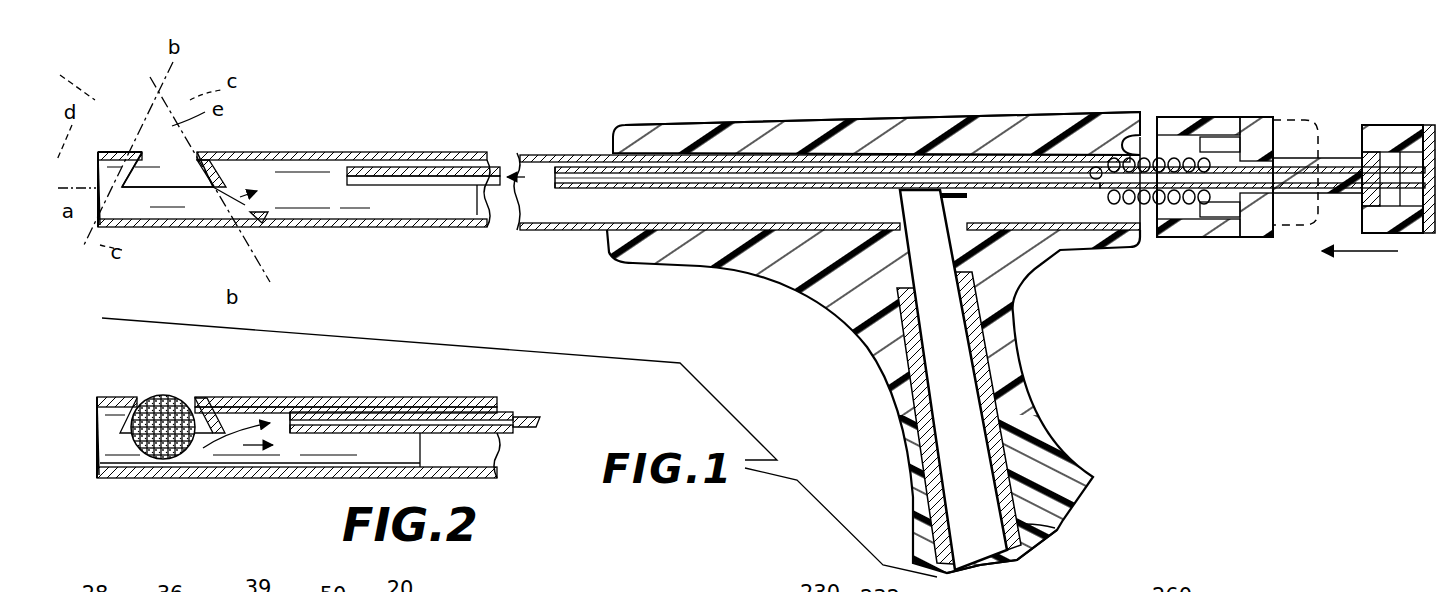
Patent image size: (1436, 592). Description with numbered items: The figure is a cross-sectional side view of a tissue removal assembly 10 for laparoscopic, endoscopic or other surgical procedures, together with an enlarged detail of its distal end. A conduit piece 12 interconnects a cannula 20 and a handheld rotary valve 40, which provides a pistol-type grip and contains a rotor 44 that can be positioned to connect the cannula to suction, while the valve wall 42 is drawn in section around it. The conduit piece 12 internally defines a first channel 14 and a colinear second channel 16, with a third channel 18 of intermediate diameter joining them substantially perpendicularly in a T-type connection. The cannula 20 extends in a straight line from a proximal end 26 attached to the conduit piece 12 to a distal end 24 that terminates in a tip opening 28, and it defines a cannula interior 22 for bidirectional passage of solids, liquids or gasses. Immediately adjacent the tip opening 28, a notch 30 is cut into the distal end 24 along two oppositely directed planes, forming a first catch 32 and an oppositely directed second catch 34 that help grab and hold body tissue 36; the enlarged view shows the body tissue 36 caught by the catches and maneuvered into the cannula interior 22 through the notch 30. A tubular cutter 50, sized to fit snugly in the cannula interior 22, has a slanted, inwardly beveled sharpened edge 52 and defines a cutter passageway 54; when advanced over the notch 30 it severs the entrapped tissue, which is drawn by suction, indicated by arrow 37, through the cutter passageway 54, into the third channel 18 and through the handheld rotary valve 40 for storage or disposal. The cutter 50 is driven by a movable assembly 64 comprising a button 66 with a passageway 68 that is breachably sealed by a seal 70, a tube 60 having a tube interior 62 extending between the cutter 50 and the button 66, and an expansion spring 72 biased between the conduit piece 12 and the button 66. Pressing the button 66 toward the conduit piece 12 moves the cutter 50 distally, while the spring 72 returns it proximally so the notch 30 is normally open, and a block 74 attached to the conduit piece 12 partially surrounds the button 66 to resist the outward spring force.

In FIG. 1, the tissue removal assembly 10 is at (857, 112).
In FIG. 1, the conduit piece 12 is at (1000, 110).
In FIG. 1, the first channel 14 is at (706, 226).
In FIG. 1, the second channel 16 is at (1093, 165).
In FIG. 1, the third channel 18 is at (938, 243).
In FIG. 1, the cannula 20 is at (420, 149).
In FIG. 2, the cannula 20 is at (288, 390).
In FIG. 1, the cannula interior 22 is at (548, 205).
In FIG. 1, the distal end 24 is at (122, 144).
In FIG. 1, the proximal end 26 is at (607, 150).
In FIG. 1, the tip opening 28 is at (92, 172).
In FIG. 2, the tip opening 28 is at (92, 428).
In FIG. 1, the notch 30 is at (176, 157).
In FIG. 1, the first catch 32 is at (148, 170).
In FIG. 1, the second catch 34 is at (167, 202).
In FIG. 2, the body tissue 36 is at (152, 394).
In FIG. 2, the arrow 37 is at (253, 448).
In FIG. 1, the handheld rotary valve 40 is at (1090, 463).
In FIG. 1, the handle wall 42 is at (1003, 473).
In FIG. 1, the rotor 44 is at (1047, 537).
In FIG. 1, the cutter 50 is at (124, 230).
In FIG. 2, the cutter 50 is at (203, 414).
In FIG. 1, the sharpened edge 52 is at (258, 200).
In FIG. 2, the sharpened edge 52 is at (190, 457).
In FIG. 1, the cutter passageway 54 is at (240, 197).
In FIG. 1, the tube 60 is at (417, 195).
In FIG. 2, the tube 60 is at (440, 412).
In FIG. 1, the tube interior 62 is at (549, 170).
In FIG. 2, the tube interior 62 is at (519, 423).
In FIG. 1, the movable assembly 64 is at (1299, 116).
In FIG. 1, the button 66 is at (1392, 125).
In FIG. 1, the passageway 68 is at (1322, 185).
In FIG. 1, the seal 70 is at (1424, 126).
In FIG. 1, the expansion spring 72 is at (1133, 157).
In FIG. 1, the block 74 is at (1230, 90).